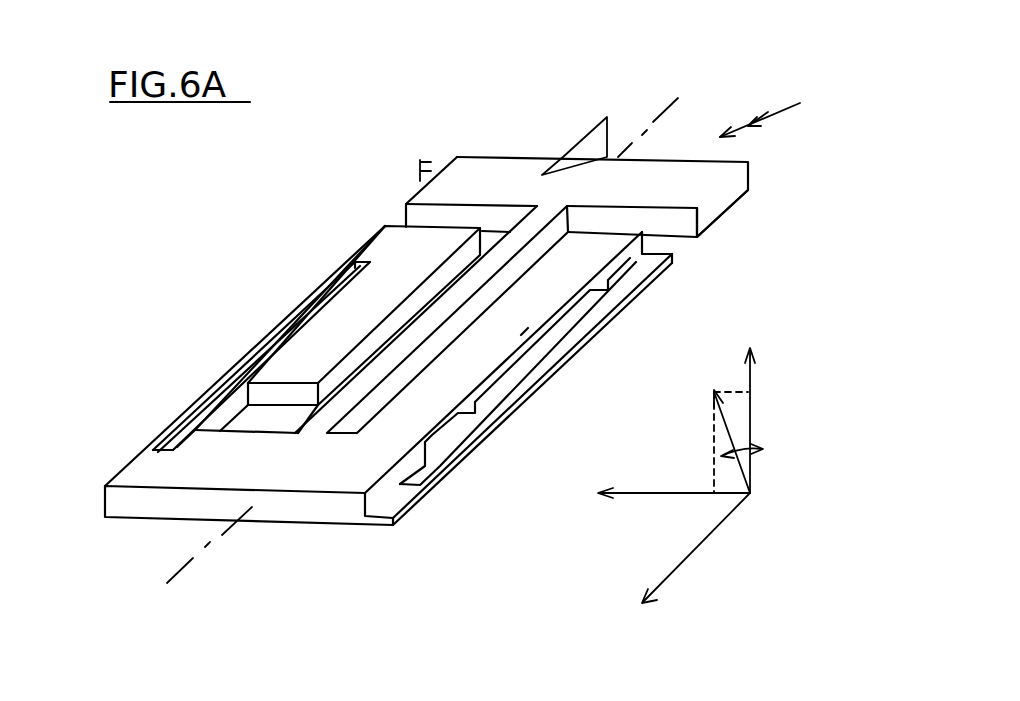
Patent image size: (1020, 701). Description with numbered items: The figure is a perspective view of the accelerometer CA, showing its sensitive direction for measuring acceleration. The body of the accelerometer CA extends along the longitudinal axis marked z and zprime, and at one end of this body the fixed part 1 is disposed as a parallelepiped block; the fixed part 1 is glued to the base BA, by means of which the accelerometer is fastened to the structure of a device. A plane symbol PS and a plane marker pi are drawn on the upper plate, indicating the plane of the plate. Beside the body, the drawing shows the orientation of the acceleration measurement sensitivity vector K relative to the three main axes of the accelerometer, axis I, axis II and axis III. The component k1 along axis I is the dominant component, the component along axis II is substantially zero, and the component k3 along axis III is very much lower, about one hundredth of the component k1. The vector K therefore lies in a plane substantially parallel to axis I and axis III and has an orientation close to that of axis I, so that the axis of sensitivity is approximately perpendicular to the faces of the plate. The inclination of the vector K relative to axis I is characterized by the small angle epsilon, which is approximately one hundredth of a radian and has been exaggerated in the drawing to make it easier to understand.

The fixed part 1 is at (740, 180).
The base BA is at (725, 236).
The plane of symmetry PS is at (590, 145).
The axis Z'Z z is at (658, 123).
The axis Z'Z zprime is at (209, 551).
The accelerometer CA is at (780, 113).
The plane of the plate pi is at (418, 172).
The axis I is at (780, 347).
The axis II is at (616, 618).
The axis III is at (597, 527).
The acceleration measurement sensitivity vector K is at (692, 359).
The angle ε epsilon is at (753, 451).
The component (k1+k'1) k1 is at (809, 386).
The component (k3+k'3) k3 is at (708, 490).